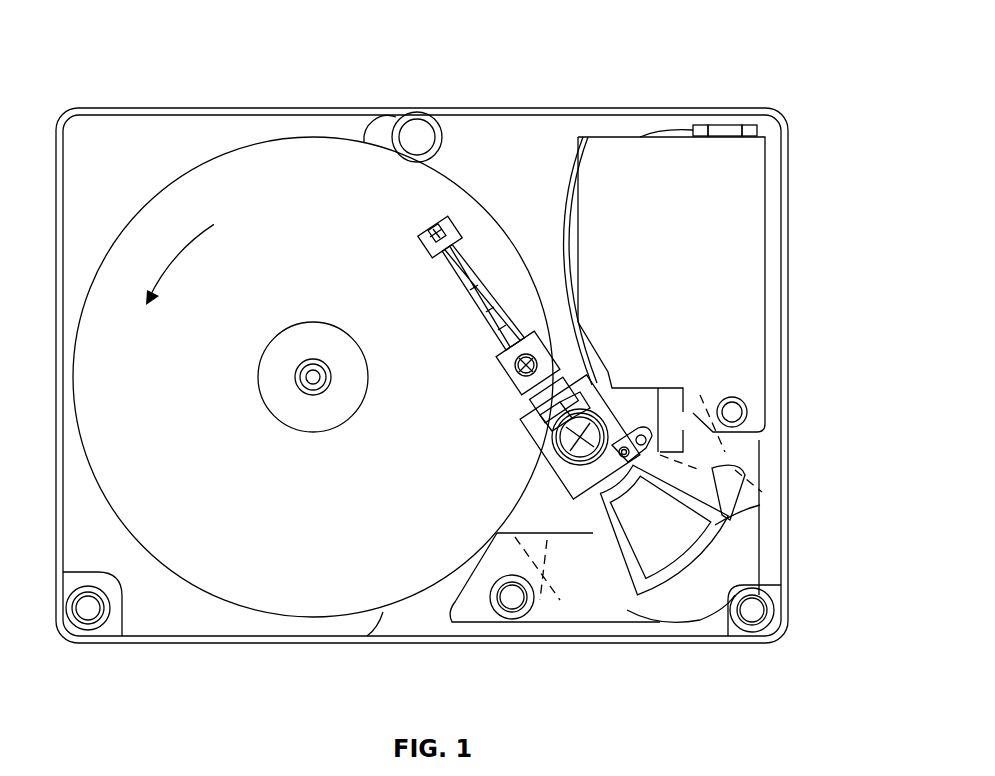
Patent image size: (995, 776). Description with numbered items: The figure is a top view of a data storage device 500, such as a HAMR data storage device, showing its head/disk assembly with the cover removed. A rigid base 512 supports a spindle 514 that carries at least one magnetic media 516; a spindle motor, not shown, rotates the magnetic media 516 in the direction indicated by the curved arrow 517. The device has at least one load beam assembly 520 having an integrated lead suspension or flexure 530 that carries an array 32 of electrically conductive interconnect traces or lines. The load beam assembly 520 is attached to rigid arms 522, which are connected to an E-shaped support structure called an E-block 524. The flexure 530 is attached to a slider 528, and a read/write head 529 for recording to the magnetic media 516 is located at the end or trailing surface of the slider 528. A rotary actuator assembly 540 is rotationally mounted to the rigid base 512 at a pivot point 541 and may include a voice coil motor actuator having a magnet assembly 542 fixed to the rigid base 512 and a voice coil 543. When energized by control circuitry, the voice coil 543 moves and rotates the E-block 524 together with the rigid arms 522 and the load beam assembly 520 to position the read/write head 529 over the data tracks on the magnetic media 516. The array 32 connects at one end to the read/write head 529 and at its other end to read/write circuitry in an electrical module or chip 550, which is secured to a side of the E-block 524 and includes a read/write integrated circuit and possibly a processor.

The data storage device 500 is at (128, 47).
The rigid base 512 is at (200, 645).
The spindle 514 is at (272, 345).
The magnetic media 516 is at (302, 603).
The curved arrow 517 is at (197, 247).
The load beam assembly 520 is at (480, 357).
The rigid arms 522 is at (505, 372).
The E-block 524 is at (530, 425).
The slider 528 is at (452, 225).
The read/write head 529 is at (428, 232).
The flexure 530 is at (450, 245).
The array of electrically conductive interconnect traces 32 is at (476, 284).
The rotary actuator assembly 540 is at (535, 492).
The pivot point 541 is at (557, 440).
The magnet assembly 542 is at (708, 398).
The voice coil 543 is at (720, 520).
The electrical module or chip 550 is at (620, 395).